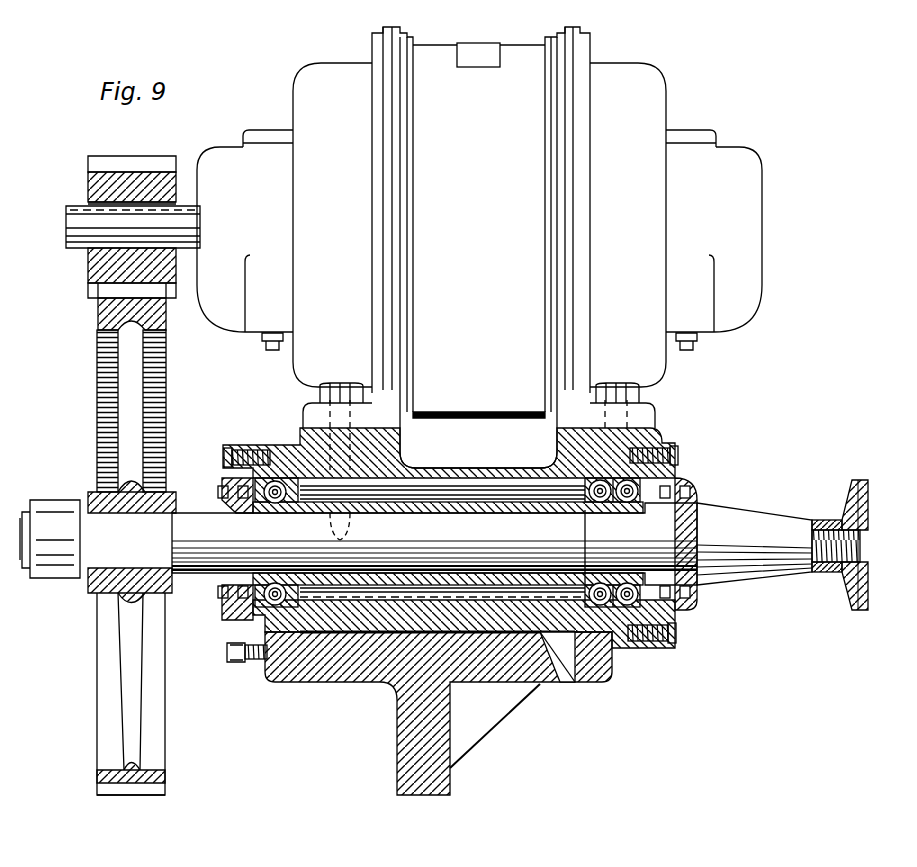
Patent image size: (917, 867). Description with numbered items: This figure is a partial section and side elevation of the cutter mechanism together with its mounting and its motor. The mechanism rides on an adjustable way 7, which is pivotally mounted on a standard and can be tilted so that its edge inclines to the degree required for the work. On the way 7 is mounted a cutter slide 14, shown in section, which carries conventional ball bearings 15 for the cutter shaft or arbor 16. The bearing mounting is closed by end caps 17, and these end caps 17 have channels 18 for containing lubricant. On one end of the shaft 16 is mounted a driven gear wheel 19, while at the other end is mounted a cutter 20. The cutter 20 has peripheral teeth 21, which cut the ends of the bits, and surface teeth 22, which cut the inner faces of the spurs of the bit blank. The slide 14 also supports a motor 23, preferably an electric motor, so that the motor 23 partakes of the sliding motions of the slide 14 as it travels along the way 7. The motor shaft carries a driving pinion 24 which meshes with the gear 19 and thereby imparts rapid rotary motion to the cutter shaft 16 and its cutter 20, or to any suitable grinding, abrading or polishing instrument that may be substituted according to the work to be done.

The adjustable way 7 is at (392, 688).
The cutter slide 14 is at (300, 440).
The ball bearings 15 is at (246, 482).
The cutter shaft 16 is at (258, 533).
The end caps 17 is at (224, 490).
The channels 18 is at (226, 590).
The driven gear wheel 19 is at (106, 456).
The cutter 20 is at (868, 585).
The peripheral teeth 21 is at (855, 610).
The surface teeth 22 is at (852, 588).
The motor 23 is at (483, 218).
The driving pinion 24 is at (92, 166).